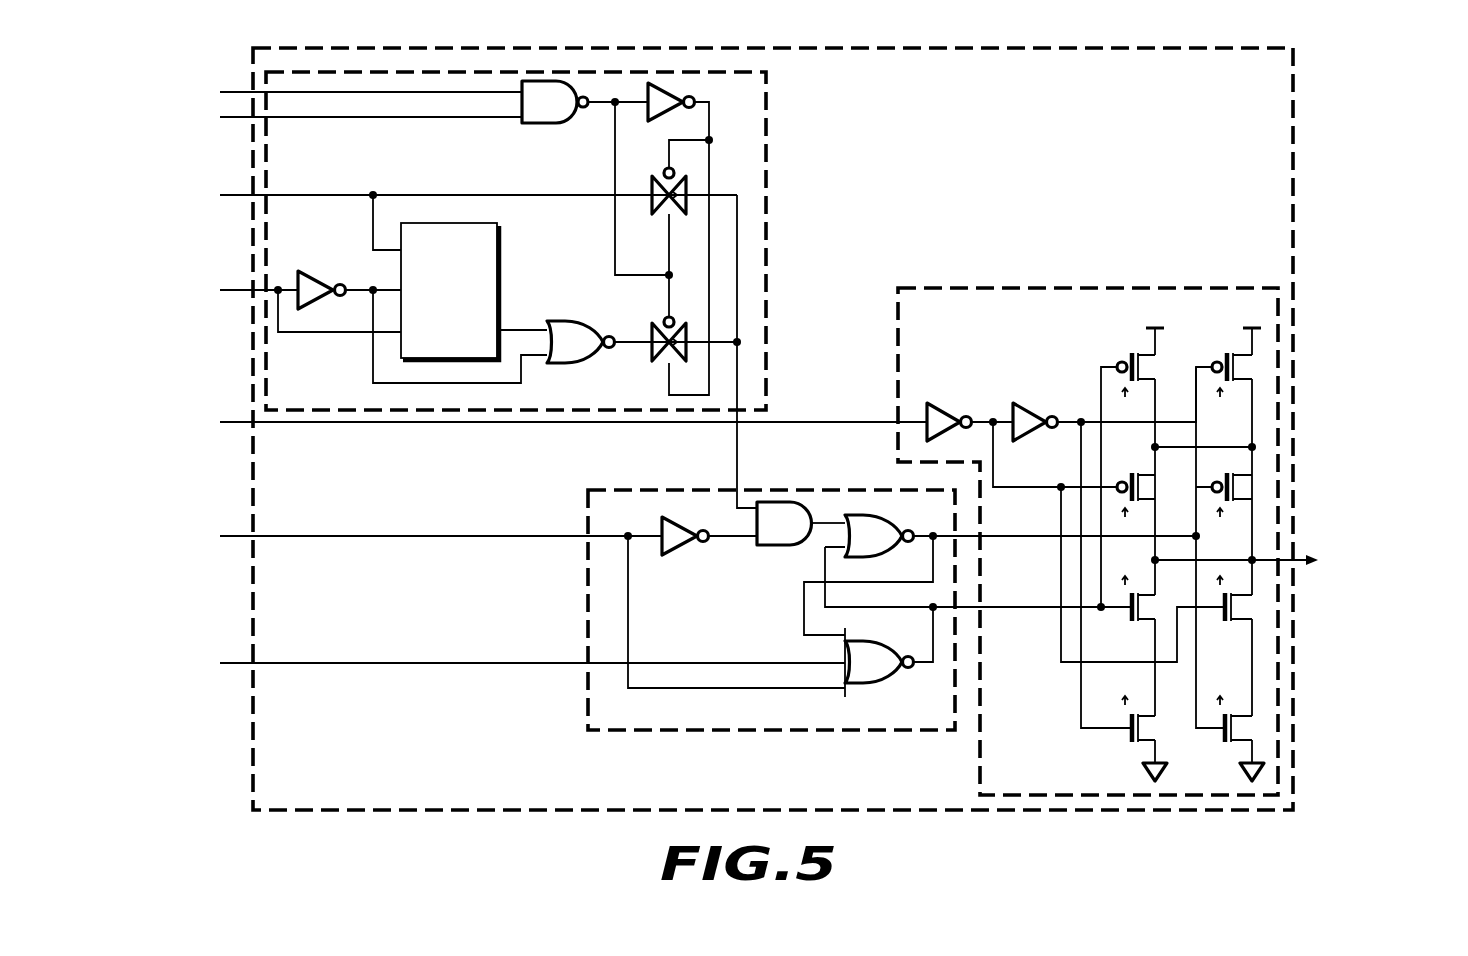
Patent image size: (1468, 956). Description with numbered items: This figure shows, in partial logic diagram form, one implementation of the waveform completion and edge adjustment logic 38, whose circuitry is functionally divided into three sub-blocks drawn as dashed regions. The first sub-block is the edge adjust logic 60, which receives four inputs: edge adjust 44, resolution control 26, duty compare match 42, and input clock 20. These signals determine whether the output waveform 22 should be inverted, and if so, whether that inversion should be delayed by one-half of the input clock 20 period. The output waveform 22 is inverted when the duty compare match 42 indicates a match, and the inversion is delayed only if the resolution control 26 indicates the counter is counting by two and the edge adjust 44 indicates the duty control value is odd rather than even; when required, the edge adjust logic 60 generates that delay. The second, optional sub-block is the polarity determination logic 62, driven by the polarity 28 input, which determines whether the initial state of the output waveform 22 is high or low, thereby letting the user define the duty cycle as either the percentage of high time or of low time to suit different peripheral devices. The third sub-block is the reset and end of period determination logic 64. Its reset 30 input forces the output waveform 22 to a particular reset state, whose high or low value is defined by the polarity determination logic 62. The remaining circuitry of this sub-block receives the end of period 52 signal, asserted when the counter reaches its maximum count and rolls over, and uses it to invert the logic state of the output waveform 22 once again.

The waveform completion and edge adjustment logic 38 is at (1226, 115).
The edge adjust logic 60 is at (775, 185).
The polarity determination logic 62 is at (1079, 273).
The reset and end of period determination logic 64 is at (608, 472).
The edge adjust signal 44 is at (302, 74).
The resolution control signal 26 is at (302, 135).
The duty compare match signal 42 is at (414, 220).
The input clock 20 is at (195, 302).
The polarity signal 28 is at (518, 439).
The reset signal 30 is at (379, 540).
The end of period signal 52 is at (466, 666).
The output waveform 22 is at (1297, 558).